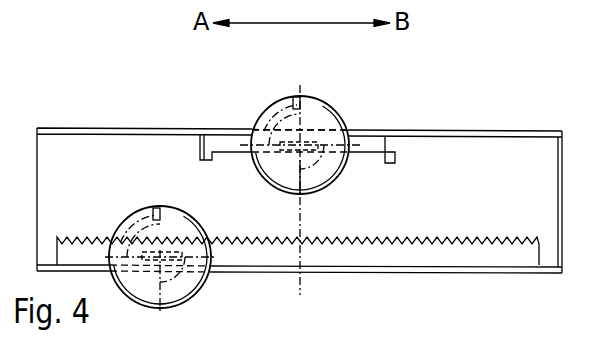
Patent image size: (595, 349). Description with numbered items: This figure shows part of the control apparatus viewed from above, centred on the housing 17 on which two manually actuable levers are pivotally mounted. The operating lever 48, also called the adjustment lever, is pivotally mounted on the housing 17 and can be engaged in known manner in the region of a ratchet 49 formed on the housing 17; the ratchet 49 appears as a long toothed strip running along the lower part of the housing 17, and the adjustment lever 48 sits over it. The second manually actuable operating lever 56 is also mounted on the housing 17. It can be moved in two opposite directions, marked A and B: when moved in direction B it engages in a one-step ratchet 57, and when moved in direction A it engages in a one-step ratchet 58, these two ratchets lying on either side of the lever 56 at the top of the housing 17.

The housing 17 is at (483, 180).
The operating lever 48 is at (161, 250).
The ratchet 49 is at (425, 237).
The second manually actuable operating lever 56 is at (297, 145).
The one-step ratchet 57 is at (391, 151).
The one-step ratchet 58 is at (207, 137).